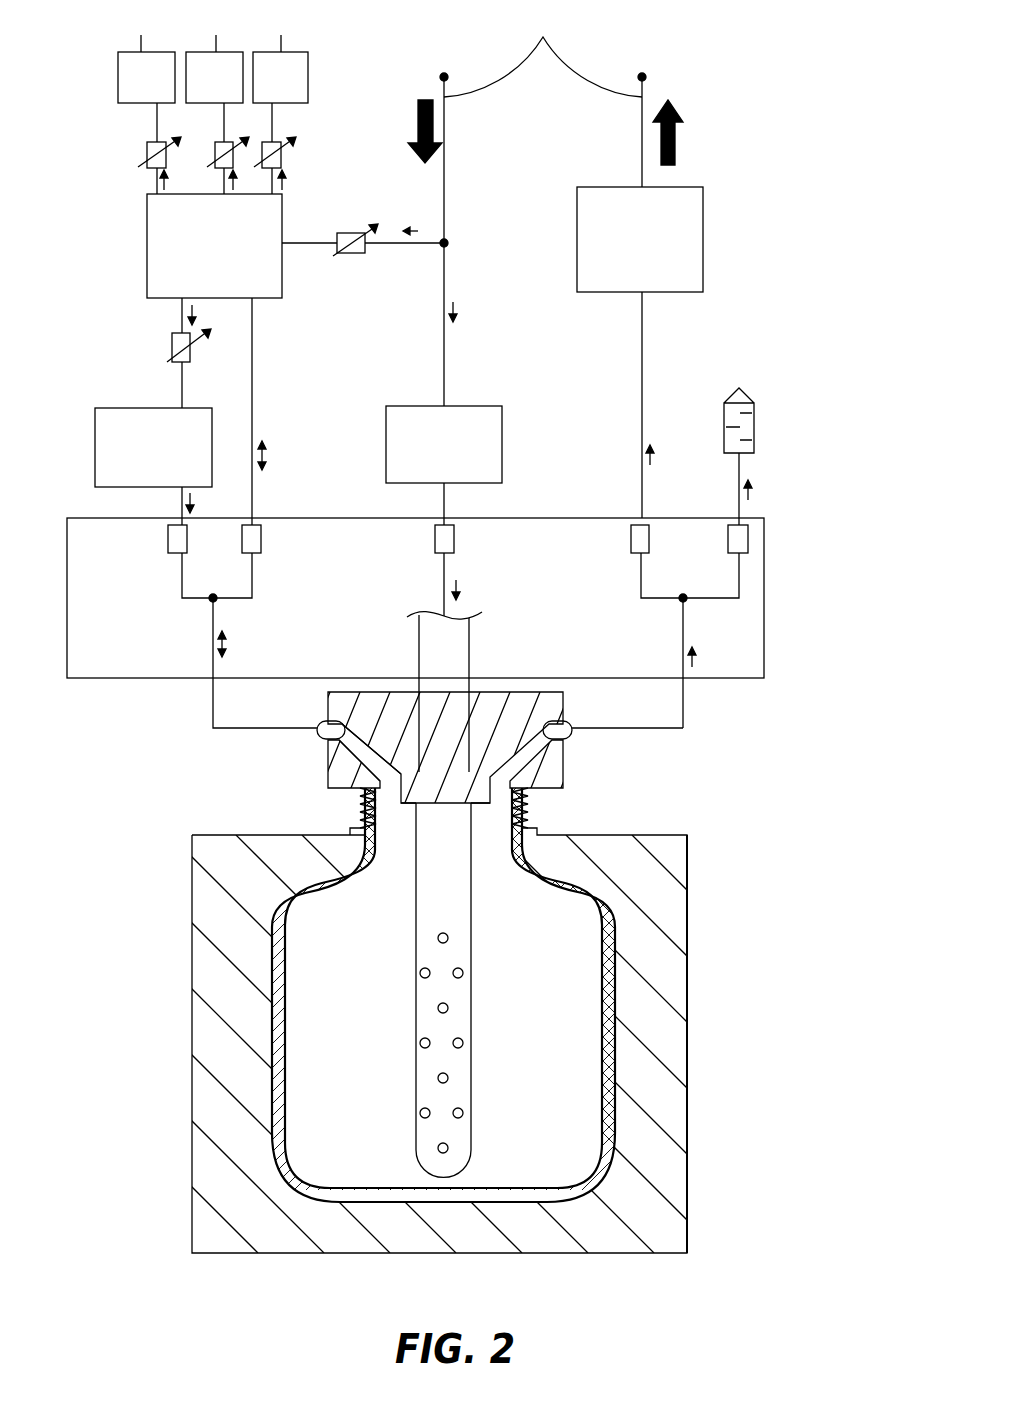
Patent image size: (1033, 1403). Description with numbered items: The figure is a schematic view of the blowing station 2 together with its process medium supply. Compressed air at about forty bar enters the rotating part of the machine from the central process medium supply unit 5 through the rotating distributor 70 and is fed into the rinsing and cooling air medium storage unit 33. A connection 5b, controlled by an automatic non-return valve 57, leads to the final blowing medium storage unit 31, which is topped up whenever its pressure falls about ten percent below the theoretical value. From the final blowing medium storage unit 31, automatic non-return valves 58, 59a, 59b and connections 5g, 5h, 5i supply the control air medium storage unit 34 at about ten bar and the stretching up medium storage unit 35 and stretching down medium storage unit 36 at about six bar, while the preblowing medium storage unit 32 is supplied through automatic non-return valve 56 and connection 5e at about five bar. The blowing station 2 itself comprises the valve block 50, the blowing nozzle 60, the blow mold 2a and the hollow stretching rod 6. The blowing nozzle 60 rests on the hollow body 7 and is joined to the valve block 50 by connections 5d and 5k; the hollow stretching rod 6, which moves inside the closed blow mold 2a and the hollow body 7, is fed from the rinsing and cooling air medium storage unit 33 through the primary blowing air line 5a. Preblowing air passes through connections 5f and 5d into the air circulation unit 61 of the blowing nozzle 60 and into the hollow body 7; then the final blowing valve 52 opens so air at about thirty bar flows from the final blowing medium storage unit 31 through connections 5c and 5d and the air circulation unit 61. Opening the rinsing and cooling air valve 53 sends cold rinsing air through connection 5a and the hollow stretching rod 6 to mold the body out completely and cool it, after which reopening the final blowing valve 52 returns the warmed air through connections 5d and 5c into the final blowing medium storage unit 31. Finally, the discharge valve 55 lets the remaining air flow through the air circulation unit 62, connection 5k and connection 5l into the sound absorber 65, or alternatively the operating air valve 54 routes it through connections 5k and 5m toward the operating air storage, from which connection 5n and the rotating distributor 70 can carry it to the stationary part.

The blowing station 2 is at (655, 786).
The blow mold 2a is at (677, 941).
The central process medium supply unit 5 is at (447, 191).
The primary blowing air line 5a is at (447, 502).
The connection 5b is at (307, 248).
The connection 5c is at (253, 376).
The connection 5d is at (212, 718).
The connection 5e is at (181, 385).
The connection 5f is at (179, 500).
The connection 5g is at (155, 121).
The connection 5h is at (222, 124).
The connection 5i is at (283, 125).
The connection 5k is at (685, 712).
The connection 5l is at (711, 600).
The connection 5m is at (640, 369).
The connection 5n is at (640, 121).
The hollow stretching rod 6 is at (460, 1095).
The hollow body 7 is at (608, 1058).
The final blowing medium storage unit 31 is at (148, 248).
The preblowing medium storage unit 32 is at (100, 447).
The rinsing and cooling air medium storage unit 33 is at (502, 446).
The control air medium storage unit 34 is at (126, 82).
The stretching up medium storage unit 35 is at (197, 58).
The stretching down medium storage unit 36 is at (308, 81).
The valve block 50 is at (766, 633).
The final blowing valve 52 is at (262, 541).
The rinsing and cooling air valve 53 is at (435, 540).
The operating air valve 54 is at (631, 540).
The discharge valve 55 is at (728, 540).
The automatic non-return valve 56 is at (172, 346).
The automatic non-return valve 57 is at (360, 258).
The automatic non-return valve 58 is at (148, 167).
The automatic non-return valve 59a is at (217, 168).
The automatic non-return valve 59b is at (290, 163).
The blowing nozzle 60 is at (556, 760).
The air circulation unit 61 is at (350, 748).
The air circulation unit 62 is at (566, 790).
The sound absorber 65 is at (755, 422).
The rotating distributor 70 is at (545, 87).